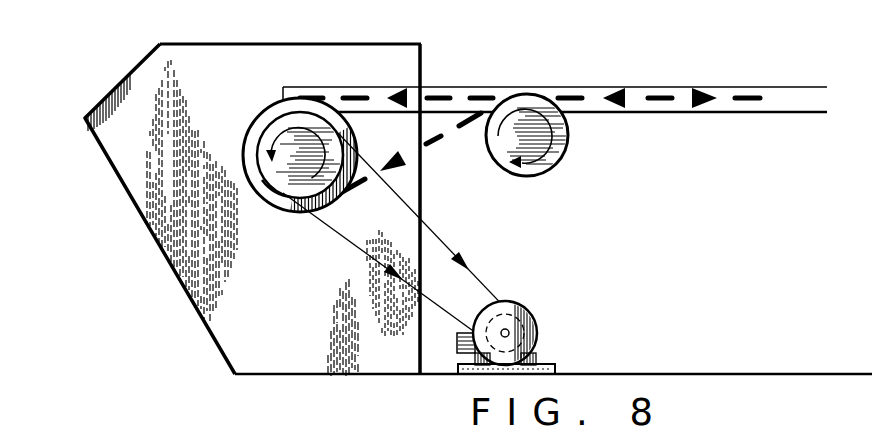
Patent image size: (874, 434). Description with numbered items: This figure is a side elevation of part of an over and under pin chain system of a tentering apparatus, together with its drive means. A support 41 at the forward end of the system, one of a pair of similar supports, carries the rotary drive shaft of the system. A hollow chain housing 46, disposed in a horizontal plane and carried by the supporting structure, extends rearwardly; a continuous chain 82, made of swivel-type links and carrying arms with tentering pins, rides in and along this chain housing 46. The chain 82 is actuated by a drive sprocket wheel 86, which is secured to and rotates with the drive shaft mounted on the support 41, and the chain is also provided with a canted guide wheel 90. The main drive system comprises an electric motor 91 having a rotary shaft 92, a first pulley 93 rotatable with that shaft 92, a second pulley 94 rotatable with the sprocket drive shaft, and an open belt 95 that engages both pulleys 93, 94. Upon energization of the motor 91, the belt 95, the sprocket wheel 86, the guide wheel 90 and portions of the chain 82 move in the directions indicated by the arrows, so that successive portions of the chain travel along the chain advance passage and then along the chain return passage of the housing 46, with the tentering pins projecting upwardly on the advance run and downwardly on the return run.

The support 41 is at (196, 307).
The chain housing 46 is at (647, 86).
The continuous chain 82 is at (461, 92).
The drive sprocket wheel 86 is at (247, 136).
The guide wheel 90 is at (553, 164).
The electric motor 91 is at (507, 303).
The rotary shaft 92 is at (519, 320).
The first pulley 93 is at (535, 323).
The second pulley 94 is at (276, 193).
The open belt 95 is at (345, 239).